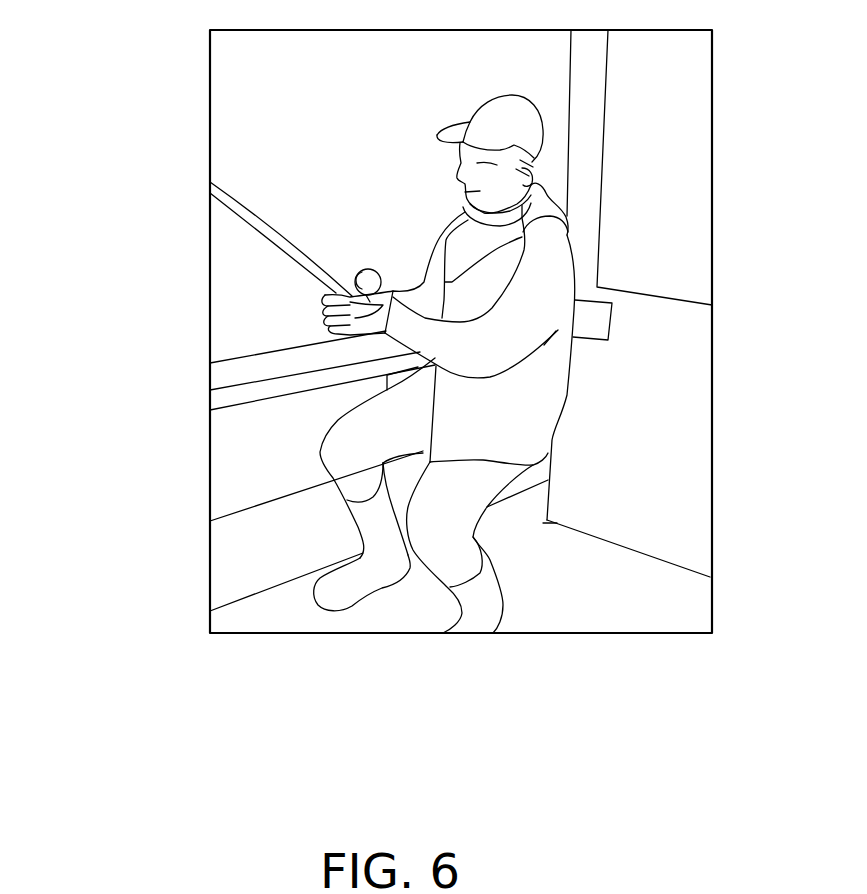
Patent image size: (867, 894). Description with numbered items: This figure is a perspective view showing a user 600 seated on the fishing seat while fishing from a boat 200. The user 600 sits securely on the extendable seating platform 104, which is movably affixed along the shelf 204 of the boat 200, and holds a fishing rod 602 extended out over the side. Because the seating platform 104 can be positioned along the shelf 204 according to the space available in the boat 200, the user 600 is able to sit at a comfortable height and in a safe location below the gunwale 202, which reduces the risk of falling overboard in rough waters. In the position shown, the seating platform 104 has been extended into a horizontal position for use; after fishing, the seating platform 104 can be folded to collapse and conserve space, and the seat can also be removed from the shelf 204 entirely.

The boat 200 is at (572, 84).
The fishing rod 602 is at (290, 250).
The gunwale 202 is at (352, 350).
The shelf 204 is at (320, 413).
The extendable seating platform 104 is at (335, 479).
The user 600 is at (525, 318).